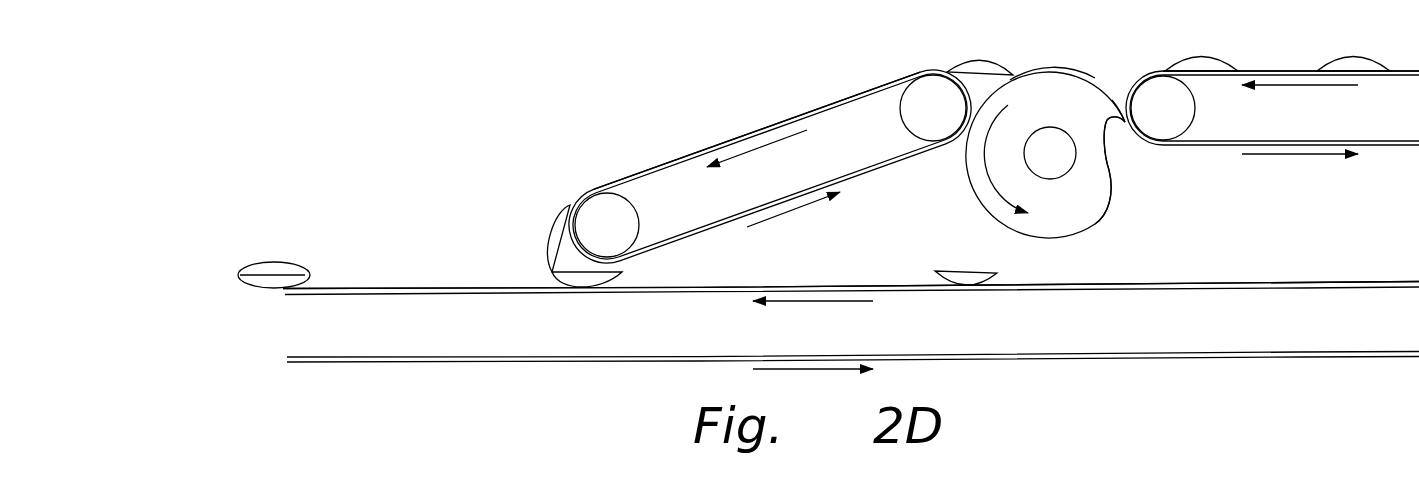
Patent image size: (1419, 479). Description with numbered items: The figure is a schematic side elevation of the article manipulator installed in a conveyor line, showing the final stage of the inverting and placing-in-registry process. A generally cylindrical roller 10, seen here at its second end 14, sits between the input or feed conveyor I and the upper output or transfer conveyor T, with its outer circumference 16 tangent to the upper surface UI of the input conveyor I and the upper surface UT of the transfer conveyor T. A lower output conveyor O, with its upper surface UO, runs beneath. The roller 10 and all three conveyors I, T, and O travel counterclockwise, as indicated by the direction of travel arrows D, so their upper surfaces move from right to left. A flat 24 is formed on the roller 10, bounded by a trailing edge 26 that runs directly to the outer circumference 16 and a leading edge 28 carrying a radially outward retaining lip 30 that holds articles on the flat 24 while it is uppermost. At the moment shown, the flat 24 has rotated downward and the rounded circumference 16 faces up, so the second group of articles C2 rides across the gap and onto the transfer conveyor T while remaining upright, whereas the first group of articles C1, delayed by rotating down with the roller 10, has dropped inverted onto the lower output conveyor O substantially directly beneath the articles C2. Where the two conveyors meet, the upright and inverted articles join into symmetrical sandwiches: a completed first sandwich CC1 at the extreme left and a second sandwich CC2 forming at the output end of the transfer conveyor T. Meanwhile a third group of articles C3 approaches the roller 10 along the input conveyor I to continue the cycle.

The roller 10 is at (1148, 138).
The second end 14 is at (1070, 108).
The outer circumference 16 is at (1053, 69).
The flat 24 is at (1112, 168).
The trailing edge 26 is at (1108, 207).
The leading edge 28 is at (1125, 123).
The retaining lip 30 is at (1118, 105).
The transfer conveyor T is at (640, 132).
The upper surface of transfer conveyor UT is at (768, 127).
The input conveyor I is at (1328, 183).
The upper surface of input conveyor UI is at (1295, 71).
The lower output conveyor O is at (910, 258).
The upper surface of lower output conveyor UO is at (850, 287).
The direction of travel arrows D is at (788, 210).
The first group of articles C1 is at (965, 271).
The second group of articles C2 is at (962, 64).
The third group of articles C3 is at (1190, 58).
The first sandwich CC1 is at (290, 262).
The second sandwich CC2 is at (547, 236).